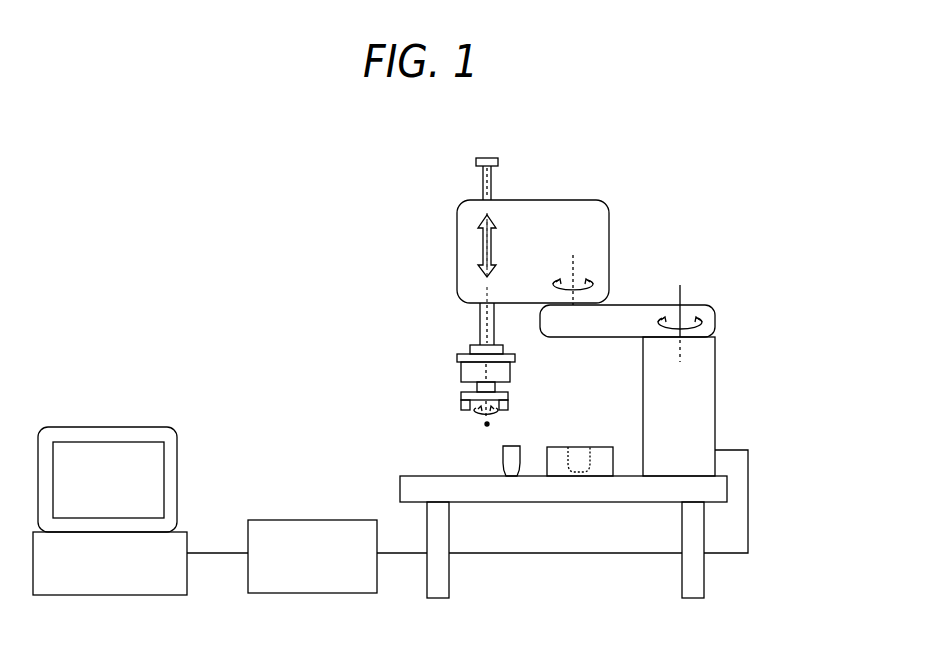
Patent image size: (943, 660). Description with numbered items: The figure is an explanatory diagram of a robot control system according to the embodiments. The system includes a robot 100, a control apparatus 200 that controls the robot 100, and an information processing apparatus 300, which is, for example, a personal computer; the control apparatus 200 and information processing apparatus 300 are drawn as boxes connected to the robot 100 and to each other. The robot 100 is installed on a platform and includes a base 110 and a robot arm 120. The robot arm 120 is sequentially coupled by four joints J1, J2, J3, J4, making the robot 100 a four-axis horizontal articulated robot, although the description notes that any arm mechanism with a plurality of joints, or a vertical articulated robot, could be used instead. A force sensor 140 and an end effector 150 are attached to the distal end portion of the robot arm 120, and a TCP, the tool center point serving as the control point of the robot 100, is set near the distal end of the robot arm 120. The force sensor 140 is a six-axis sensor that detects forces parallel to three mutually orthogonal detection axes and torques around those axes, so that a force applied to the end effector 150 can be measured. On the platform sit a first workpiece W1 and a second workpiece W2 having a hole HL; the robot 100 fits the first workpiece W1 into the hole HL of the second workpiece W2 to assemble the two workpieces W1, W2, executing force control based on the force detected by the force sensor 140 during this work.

The robot 100 is at (755, 186).
The base 110 is at (715, 345).
The robot arm 120 is at (697, 304).
The force sensor 140 is at (461, 372).
The end effector 150 is at (463, 405).
The control apparatus 200 is at (292, 520).
The information processing apparatus 300 is at (76, 427).
The joint J1 is at (677, 297).
The joint J2 is at (571, 268).
The joint J3 is at (493, 246).
The joint J4 is at (462, 294).
The tool center point TCP is at (483, 425).
The first workpiece W1 is at (512, 446).
The second workpiece W2 is at (556, 447).
The hole HL is at (584, 448).